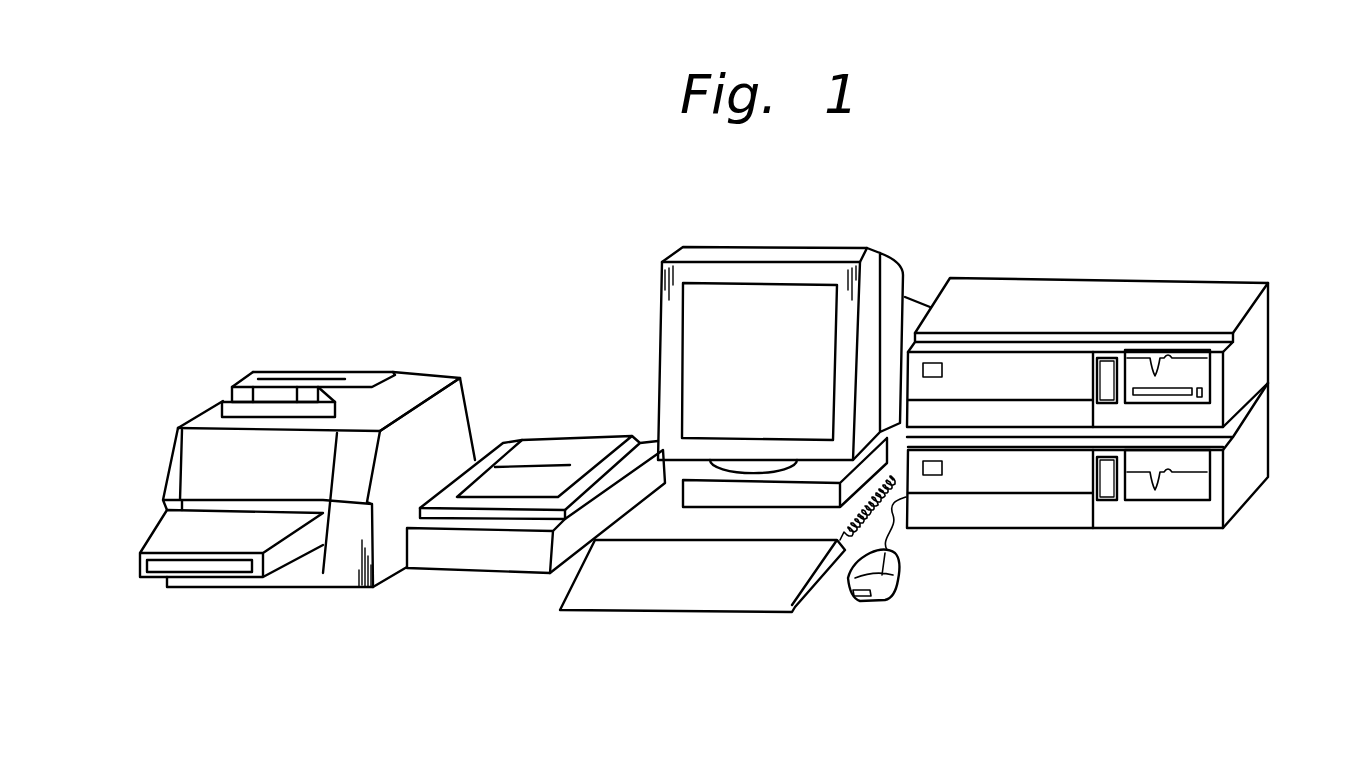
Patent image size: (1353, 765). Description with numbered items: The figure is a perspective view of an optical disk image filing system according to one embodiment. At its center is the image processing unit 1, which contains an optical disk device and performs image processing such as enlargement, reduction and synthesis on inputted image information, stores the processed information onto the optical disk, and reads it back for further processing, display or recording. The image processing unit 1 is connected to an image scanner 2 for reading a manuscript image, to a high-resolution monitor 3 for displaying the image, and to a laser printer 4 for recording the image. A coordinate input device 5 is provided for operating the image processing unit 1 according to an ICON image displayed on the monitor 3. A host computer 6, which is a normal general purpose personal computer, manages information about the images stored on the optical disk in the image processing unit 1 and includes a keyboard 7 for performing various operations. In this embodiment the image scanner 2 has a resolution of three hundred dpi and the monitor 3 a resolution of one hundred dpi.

The image processing unit 1 is at (1268, 313).
The image scanner 2 is at (522, 443).
The monitor 3 is at (660, 303).
The laser printer 4 is at (435, 378).
The coordinate input device 5 is at (877, 600).
The host computer 6 is at (1268, 423).
The keyboard 7 is at (757, 612).